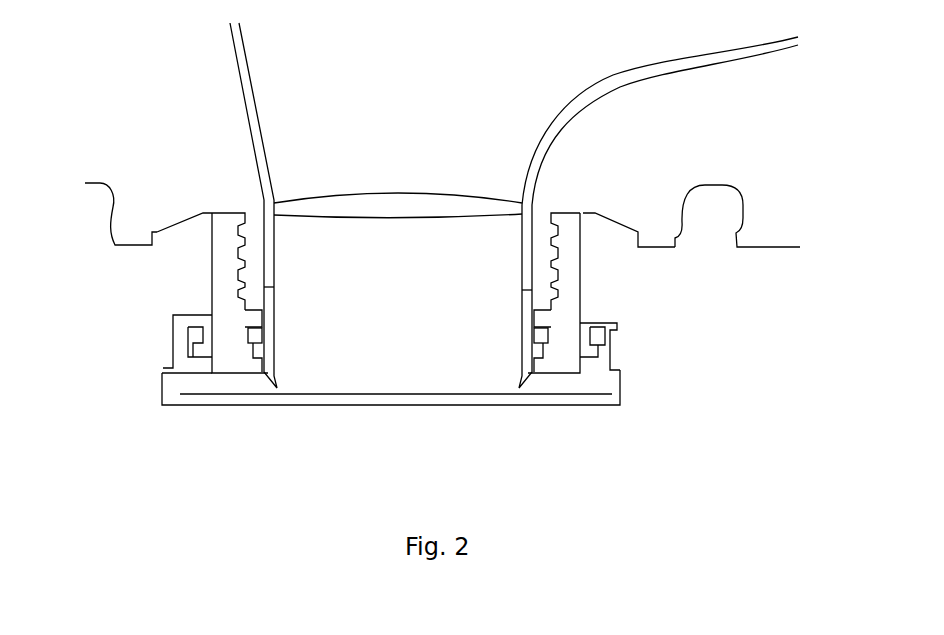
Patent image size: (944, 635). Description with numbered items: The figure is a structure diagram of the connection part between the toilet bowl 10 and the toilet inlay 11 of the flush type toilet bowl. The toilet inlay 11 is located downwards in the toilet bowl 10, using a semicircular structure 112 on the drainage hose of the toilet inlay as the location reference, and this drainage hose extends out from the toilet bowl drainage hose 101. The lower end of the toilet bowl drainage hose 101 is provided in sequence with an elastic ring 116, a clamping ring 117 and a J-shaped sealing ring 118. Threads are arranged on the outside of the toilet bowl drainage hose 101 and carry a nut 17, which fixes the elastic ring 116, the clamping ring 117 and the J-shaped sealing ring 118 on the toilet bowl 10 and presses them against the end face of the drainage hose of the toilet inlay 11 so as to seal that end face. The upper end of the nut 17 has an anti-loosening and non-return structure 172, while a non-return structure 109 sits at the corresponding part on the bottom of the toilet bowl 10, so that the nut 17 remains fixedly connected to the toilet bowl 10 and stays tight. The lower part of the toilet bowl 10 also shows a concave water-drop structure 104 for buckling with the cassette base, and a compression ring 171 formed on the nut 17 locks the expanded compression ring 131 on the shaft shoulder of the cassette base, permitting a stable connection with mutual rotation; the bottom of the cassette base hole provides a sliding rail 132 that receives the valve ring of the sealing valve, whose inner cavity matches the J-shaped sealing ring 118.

The toilet bowl 10 is at (133, 228).
The toilet inlay 11 is at (236, 53).
The nut 17 is at (222, 282).
The toilet bowl drainage hose 101 is at (542, 262).
The concave water-drop structure 104 is at (707, 208).
The non-return structure 109 is at (590, 215).
The semicircular structure 112 is at (525, 293).
The elastic ring 116 is at (265, 330).
The clamping ring 117 is at (258, 322).
The J-shaped sealing ring 118 is at (259, 343).
The expanded compression ring 131 is at (615, 327).
The sliding rail 132 is at (598, 387).
The compression ring 171 is at (200, 350).
The anti-loosening and non-return structure 172 is at (213, 217).